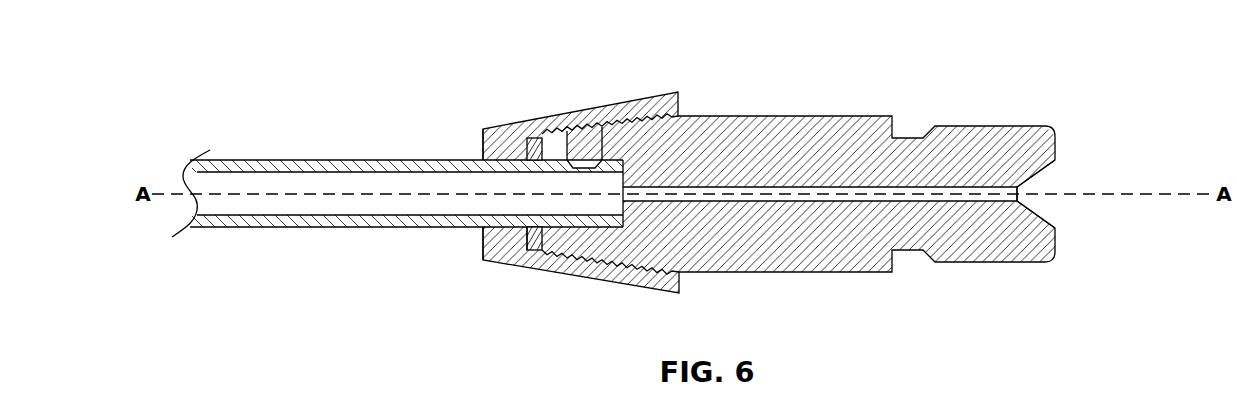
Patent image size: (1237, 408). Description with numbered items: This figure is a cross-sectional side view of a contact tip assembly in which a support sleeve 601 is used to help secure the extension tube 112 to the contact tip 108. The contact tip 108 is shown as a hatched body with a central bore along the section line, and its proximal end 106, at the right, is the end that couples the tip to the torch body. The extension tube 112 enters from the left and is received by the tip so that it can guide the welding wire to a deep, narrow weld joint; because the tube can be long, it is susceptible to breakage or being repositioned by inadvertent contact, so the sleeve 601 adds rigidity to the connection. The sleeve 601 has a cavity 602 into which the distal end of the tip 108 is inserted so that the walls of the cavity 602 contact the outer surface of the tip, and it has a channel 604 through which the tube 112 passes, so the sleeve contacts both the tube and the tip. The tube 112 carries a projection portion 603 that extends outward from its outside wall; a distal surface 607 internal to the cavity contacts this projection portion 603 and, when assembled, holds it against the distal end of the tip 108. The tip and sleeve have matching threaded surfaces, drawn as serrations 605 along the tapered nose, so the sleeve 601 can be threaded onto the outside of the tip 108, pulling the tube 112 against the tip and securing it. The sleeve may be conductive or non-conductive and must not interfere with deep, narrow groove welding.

The proximal end 106 is at (1055, 163).
The contact tip 108 is at (812, 92).
The extension tube 112 is at (303, 160).
The support sleeve 601 is at (602, 106).
The cavity 602 is at (679, 117).
The projection portion 603 is at (528, 155).
The channel 604 is at (503, 158).
The serrations 605 is at (623, 264).
The distal surface 607 is at (524, 237).